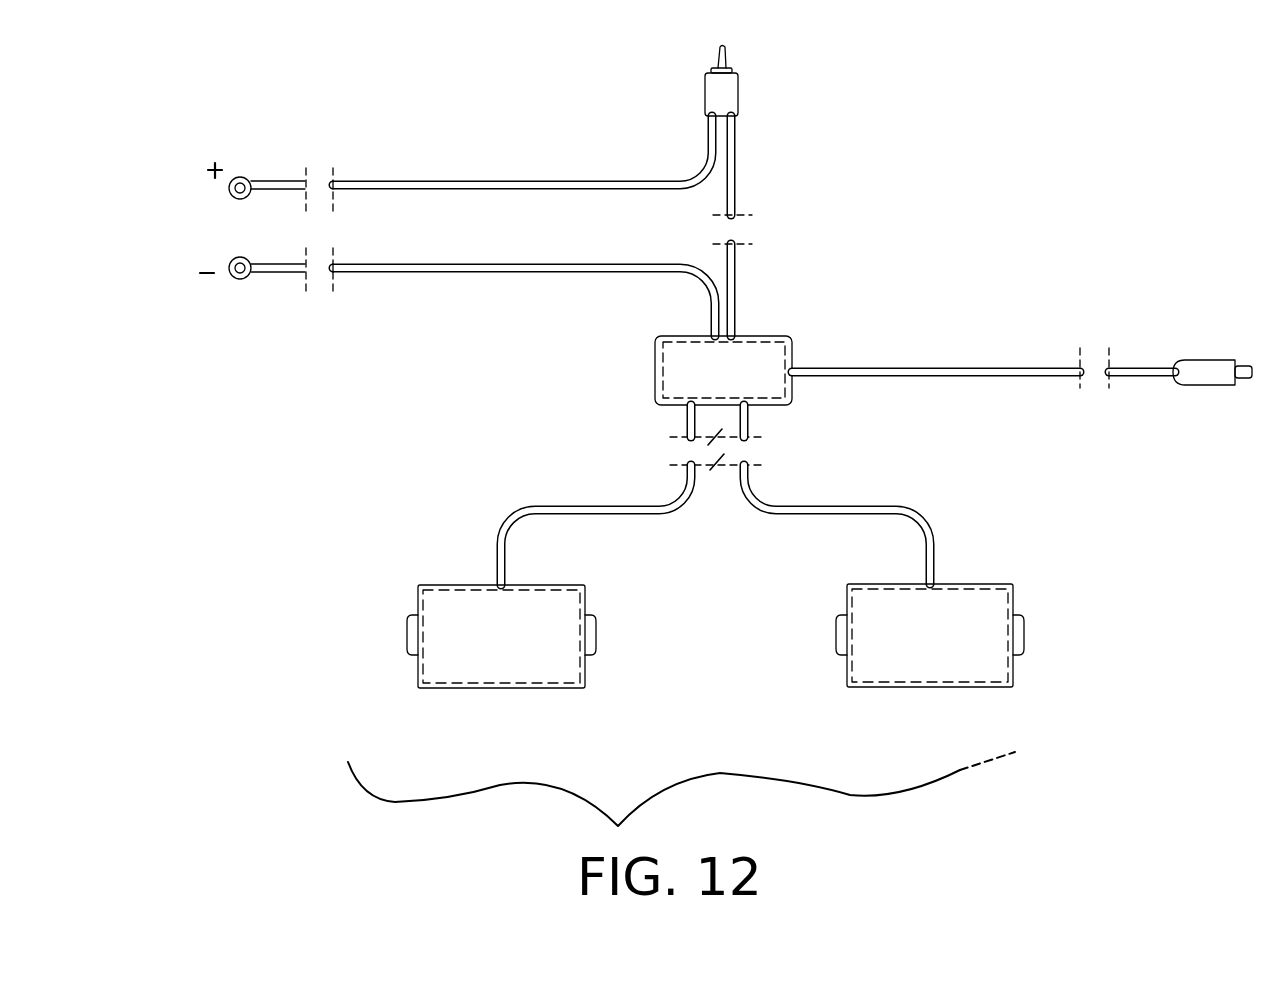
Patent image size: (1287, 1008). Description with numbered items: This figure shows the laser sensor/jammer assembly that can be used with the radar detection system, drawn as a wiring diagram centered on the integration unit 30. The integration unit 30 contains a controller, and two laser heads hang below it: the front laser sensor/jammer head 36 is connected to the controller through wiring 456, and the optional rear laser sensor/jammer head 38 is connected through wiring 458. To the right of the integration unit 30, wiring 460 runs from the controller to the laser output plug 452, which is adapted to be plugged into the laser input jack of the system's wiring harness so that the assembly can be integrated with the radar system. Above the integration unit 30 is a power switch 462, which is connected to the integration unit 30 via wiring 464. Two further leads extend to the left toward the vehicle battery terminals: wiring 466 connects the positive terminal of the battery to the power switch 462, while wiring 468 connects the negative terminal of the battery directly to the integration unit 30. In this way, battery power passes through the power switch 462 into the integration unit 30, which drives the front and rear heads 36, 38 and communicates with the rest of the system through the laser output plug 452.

The integration unit 30 is at (655, 378).
The front laser sensor/jammer head 36 is at (520, 648).
The rear laser sensor/jammer head 38 is at (940, 648).
The laser output plug 452 is at (1197, 365).
The wiring 456 is at (616, 515).
The wiring 458 is at (815, 518).
The wiring 460 is at (935, 378).
The power switch 462 is at (738, 92).
The wiring 464 is at (737, 258).
The wiring 466 is at (473, 182).
The wiring 468 is at (458, 273).